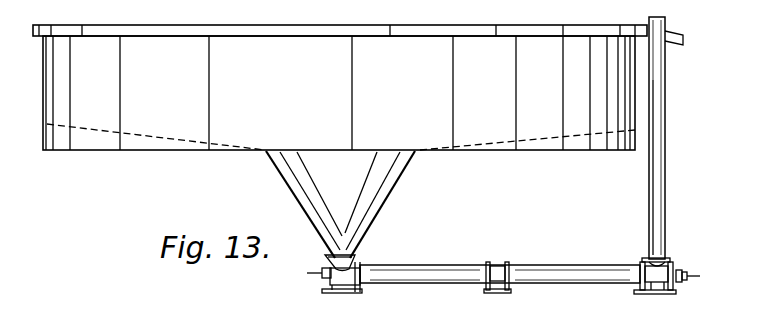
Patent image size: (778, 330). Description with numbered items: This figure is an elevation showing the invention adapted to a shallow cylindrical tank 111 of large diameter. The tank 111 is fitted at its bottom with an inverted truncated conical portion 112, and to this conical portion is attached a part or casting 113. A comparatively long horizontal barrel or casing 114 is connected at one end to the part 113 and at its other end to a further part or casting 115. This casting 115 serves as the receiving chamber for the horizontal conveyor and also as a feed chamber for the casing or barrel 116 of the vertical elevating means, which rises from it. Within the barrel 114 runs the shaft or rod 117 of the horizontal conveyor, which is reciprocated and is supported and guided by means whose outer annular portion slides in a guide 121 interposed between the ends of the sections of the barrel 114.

The tank 111 is at (340, 87).
The inverted truncated conical portion 112 is at (332, 163).
The part or casting 113 is at (333, 257).
The horizontal barrel or casing 114 is at (430, 265).
The part or casting 115 is at (655, 280).
The casing or barrel of the vertical elevating means 116 is at (666, 150).
The shaft or rod 117 is at (307, 273).
The guide 121 is at (497, 272).